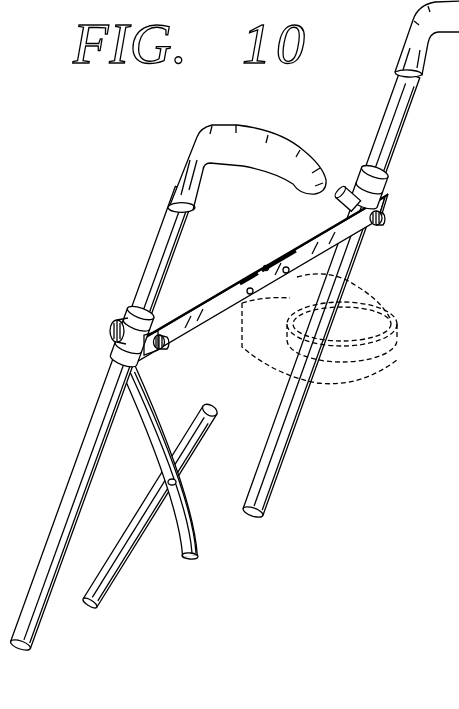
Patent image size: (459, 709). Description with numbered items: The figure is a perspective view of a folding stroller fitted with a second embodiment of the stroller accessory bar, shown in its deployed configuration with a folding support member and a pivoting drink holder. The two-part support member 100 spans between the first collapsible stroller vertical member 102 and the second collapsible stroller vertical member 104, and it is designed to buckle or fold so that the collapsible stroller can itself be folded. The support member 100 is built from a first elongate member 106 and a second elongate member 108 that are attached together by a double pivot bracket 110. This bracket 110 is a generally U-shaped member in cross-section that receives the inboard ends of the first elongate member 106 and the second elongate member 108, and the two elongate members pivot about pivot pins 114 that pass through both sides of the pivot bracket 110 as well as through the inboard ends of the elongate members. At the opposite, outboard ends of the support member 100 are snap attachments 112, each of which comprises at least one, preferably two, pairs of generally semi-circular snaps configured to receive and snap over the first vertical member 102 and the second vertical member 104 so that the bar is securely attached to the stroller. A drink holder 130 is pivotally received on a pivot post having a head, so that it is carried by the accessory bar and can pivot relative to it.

The two-part support member 100 is at (234, 326).
The first collapsible stroller vertical member 102 is at (154, 255).
The second collapsible stroller vertical member 104 is at (388, 119).
The first elongate member 106 is at (204, 302).
The second elongate member 108 is at (345, 233).
The double pivot bracket 110 is at (266, 266).
The snap attachment 112 is at (383, 184).
The pivot pin 114 is at (248, 280).
The drink holder 130 is at (357, 378).